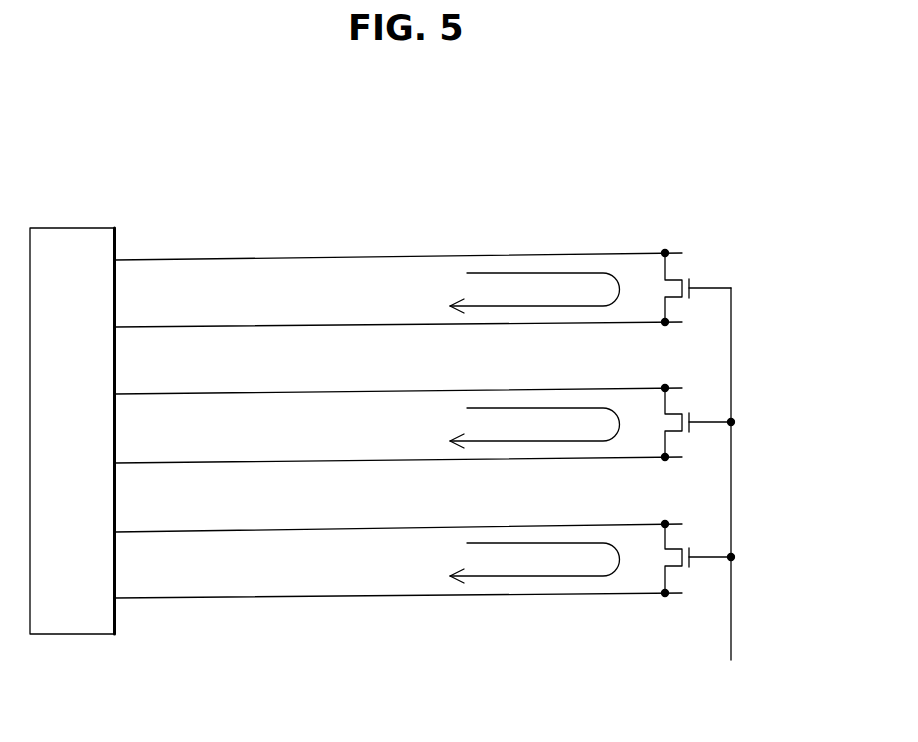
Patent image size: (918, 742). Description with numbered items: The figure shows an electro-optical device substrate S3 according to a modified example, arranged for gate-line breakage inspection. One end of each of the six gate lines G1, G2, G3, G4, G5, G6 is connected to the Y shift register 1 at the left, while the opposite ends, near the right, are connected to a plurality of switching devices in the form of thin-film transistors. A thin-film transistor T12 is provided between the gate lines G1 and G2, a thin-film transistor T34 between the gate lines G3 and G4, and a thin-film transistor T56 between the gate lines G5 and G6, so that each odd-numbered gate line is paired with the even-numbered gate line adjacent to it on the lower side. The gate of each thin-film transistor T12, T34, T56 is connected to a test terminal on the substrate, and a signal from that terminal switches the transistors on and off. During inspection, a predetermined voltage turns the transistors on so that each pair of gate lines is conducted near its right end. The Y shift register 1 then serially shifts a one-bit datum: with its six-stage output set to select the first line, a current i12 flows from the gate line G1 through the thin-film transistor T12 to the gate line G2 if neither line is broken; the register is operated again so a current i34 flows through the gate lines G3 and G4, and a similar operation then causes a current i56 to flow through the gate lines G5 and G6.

The Y shift register 1 is at (76, 228).
The electro-optical device substrate S3 is at (622, 142).
The gate line G1 is at (250, 258).
The gate line G2 is at (250, 325).
The gate line G3 is at (250, 392).
The gate line G4 is at (250, 461).
The gate line G5 is at (250, 530).
The gate line G6 is at (250, 596).
The thin-film transistor T12 is at (697, 270).
The thin-film transistor T34 is at (698, 404).
The thin-film transistor T56 is at (698, 540).
The current i12 is at (518, 287).
The current i34 is at (518, 422).
The current i56 is at (518, 557).